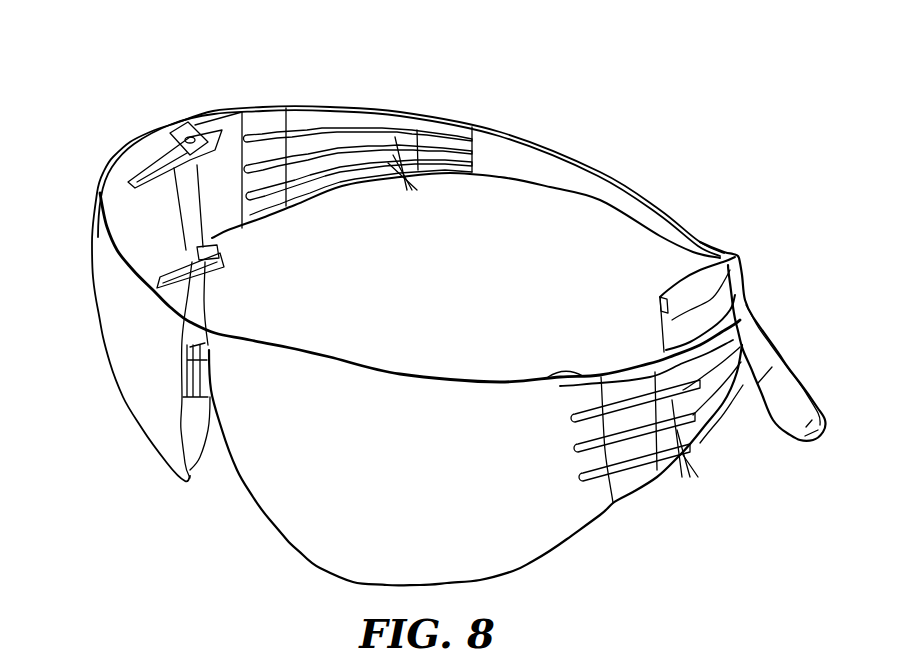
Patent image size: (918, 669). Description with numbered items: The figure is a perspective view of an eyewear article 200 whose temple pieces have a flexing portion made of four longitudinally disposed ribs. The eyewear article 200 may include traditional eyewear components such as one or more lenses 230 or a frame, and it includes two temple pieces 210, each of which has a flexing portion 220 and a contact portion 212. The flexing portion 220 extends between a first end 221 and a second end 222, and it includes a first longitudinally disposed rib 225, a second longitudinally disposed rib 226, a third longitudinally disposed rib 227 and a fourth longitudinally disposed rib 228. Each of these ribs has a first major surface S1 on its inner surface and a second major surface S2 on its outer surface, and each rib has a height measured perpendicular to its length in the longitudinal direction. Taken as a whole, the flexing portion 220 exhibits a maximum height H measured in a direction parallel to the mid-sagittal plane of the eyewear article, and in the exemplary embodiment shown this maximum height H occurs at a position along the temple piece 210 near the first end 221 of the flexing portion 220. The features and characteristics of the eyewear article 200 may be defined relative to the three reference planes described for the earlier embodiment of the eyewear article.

The eyewear article 200 is at (145, 65).
The temple piece 210 is at (447, 93).
The contact portion 212 is at (724, 248).
The flexing portion 220 is at (345, 100).
The first end 221 is at (232, 124).
The second end 222 is at (413, 120).
The first longitudinally disposed rib 225 is at (265, 118).
The second longitudinally disposed rib 226 is at (274, 146).
The third longitudinally disposed rib 227 is at (267, 173).
The fourth longitudinally disposed rib 228 is at (277, 203).
The lens 230 is at (542, 542).
The first major surface S1 is at (406, 180).
The second major surface S2 is at (689, 456).
The maximum height H is at (625, 340).